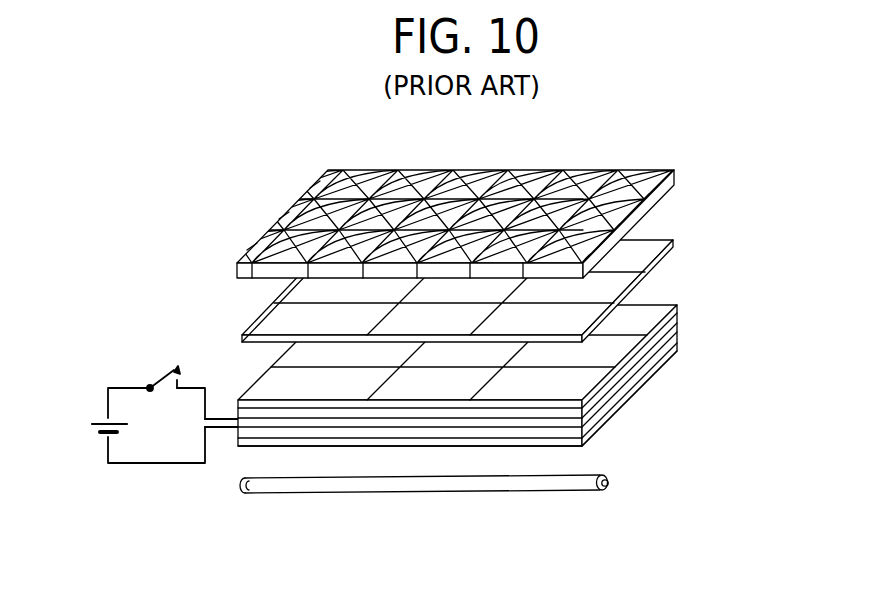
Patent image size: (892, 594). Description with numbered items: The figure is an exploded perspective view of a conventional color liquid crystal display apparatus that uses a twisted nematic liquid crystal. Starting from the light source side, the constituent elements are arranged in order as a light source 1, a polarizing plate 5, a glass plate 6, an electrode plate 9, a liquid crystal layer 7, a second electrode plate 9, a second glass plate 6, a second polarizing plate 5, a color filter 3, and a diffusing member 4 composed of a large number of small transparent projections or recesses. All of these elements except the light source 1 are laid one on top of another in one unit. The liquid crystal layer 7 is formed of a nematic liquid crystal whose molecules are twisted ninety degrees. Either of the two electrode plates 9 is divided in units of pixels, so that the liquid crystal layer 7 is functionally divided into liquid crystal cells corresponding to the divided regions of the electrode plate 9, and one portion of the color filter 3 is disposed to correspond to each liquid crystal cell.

The light source 1 is at (573, 492).
The color filter 3 is at (673, 243).
The diffusing member 4 is at (538, 168).
The polarizing plate 5 is at (489, 373).
The glass plate 6 is at (682, 324).
The liquid crystal layer 7 is at (653, 357).
The electrode plate 9 is at (237, 418).